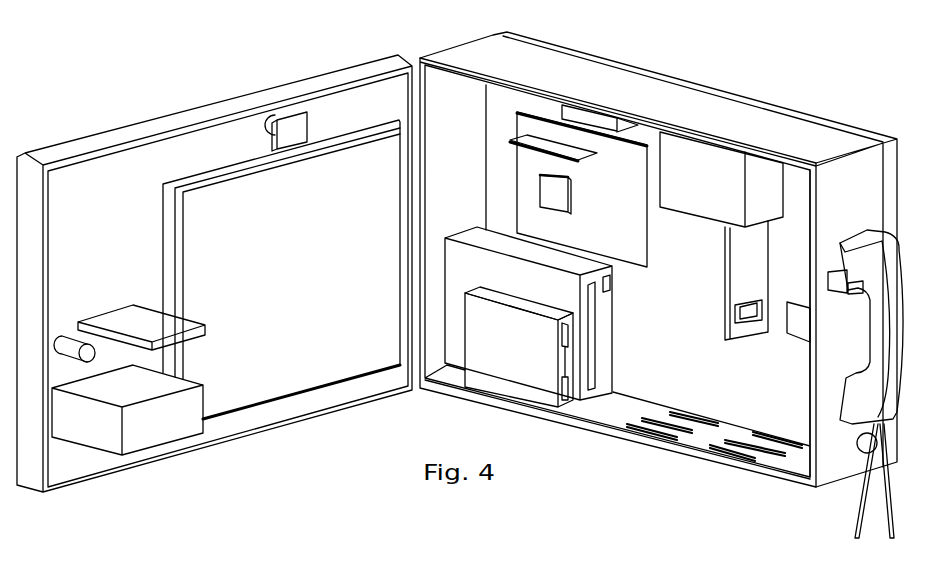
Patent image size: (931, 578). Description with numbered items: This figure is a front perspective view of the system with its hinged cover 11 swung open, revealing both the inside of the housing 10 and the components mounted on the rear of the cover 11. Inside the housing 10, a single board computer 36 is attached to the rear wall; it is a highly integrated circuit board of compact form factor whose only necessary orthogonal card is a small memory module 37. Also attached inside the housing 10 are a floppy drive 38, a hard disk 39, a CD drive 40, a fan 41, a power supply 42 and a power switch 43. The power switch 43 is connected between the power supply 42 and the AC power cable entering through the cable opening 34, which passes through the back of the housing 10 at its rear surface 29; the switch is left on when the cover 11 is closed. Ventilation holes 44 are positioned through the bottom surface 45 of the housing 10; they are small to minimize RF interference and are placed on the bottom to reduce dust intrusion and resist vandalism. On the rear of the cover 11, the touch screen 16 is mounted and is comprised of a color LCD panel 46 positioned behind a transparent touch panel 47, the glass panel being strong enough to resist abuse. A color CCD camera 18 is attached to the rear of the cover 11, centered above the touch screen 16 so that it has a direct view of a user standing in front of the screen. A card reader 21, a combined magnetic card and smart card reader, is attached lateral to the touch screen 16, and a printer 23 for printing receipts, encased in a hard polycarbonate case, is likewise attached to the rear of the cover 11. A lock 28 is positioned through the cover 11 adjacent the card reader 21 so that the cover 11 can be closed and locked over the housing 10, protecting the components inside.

The housing 10 is at (677, 90).
The cover 11 is at (210, 103).
The touch screen 16 is at (190, 278).
The color CCD camera 18 is at (308, 126).
The card reader 21 is at (105, 313).
The printer 23 is at (203, 390).
The lock 28 is at (63, 332).
The rear surface 29 is at (805, 213).
The cable opening 34 is at (798, 343).
The single board computer 36 is at (650, 228).
The memory module 37 is at (583, 160).
The floppy drive 38 is at (510, 306).
The hard disk 39 is at (552, 303).
The CD drive 40 is at (613, 332).
The fan 41 is at (598, 118).
The power supply 42 is at (712, 222).
The power switch 43 is at (735, 313).
The ventilation holes 44 is at (695, 420).
The bottom surface 45 is at (698, 445).
The LCD panel 46 is at (178, 250).
The touch panel 47 is at (163, 223).